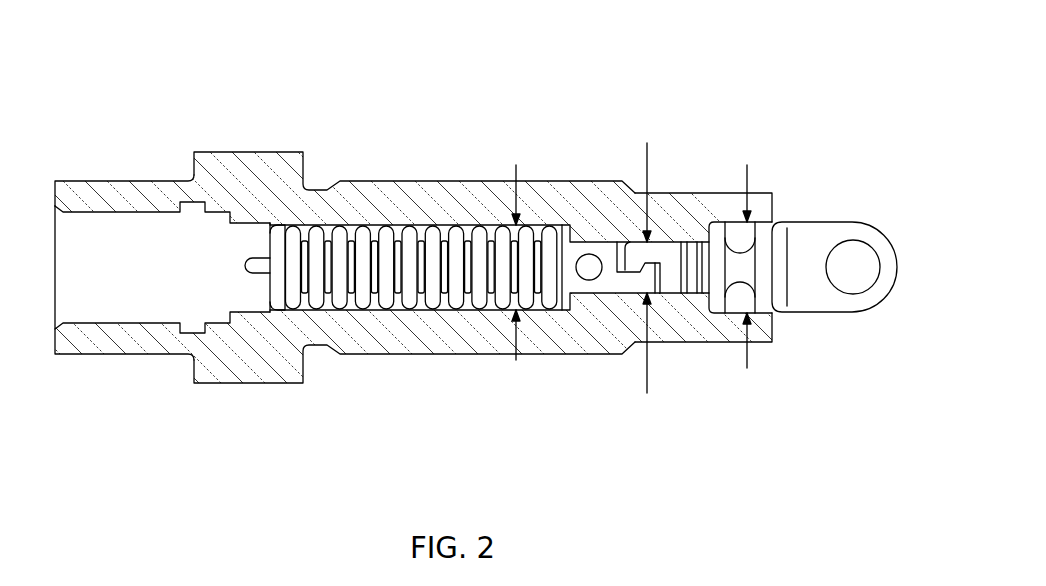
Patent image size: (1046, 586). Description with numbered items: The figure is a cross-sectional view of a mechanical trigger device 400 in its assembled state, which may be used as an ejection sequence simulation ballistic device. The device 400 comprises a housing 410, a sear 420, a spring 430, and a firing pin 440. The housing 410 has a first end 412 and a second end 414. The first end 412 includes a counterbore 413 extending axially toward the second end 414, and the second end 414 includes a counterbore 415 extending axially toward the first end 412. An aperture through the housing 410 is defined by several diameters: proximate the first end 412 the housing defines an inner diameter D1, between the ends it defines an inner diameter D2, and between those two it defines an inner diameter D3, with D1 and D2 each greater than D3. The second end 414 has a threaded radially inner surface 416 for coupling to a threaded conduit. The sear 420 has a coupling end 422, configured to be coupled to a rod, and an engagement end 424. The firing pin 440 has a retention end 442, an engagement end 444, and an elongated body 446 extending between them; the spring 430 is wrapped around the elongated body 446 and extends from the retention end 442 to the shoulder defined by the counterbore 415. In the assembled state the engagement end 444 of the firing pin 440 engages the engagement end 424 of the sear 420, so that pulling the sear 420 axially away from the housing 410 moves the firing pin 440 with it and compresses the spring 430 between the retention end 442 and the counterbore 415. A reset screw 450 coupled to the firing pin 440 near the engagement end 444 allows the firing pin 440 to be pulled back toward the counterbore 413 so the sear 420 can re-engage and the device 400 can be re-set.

The mechanical trigger device 400 is at (702, 98).
The housing 410 is at (495, 210).
The first end 412 is at (773, 213).
The counterbore 413 is at (708, 307).
The second end 414 is at (133, 205).
The counterbore 415 is at (568, 228).
The threaded radially inner surface 416 is at (122, 325).
The sear 420 is at (805, 245).
The coupling end 422 is at (868, 235).
The engagement end 424 is at (672, 248).
The spring 430 is at (342, 232).
The firing pin 440 is at (402, 263).
The retention end 442 is at (278, 272).
The engagement end 444 is at (623, 285).
The elongated body 446 is at (380, 270).
The reset screw 450 is at (586, 272).
The inner diameter D1 is at (744, 253).
The inner diameter D2 is at (514, 253).
The inner diameter D3 is at (648, 256).